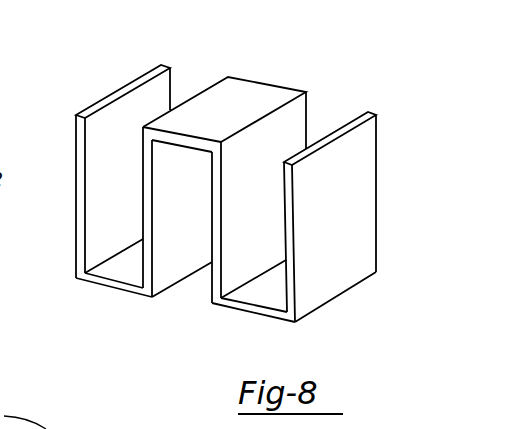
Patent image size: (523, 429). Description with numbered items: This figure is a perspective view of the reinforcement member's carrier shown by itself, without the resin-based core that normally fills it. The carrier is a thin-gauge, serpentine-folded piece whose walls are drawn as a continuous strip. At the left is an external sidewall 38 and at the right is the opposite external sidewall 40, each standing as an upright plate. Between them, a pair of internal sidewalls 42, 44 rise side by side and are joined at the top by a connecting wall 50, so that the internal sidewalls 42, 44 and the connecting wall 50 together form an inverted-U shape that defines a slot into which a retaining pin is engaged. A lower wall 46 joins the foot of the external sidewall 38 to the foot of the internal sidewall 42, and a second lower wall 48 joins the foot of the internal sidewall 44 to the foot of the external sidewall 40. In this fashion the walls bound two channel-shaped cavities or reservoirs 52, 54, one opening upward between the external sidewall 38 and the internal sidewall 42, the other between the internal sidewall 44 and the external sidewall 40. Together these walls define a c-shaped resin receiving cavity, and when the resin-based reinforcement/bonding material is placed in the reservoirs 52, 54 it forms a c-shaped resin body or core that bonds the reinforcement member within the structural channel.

The external sidewall 38 is at (75, 168).
The external sidewall 40 is at (343, 213).
The internal sidewall 42 is at (135, 155).
The internal sidewall 44 is at (268, 201).
The lower wall 46 is at (110, 291).
The lower wall 48 is at (248, 318).
The connecting wall 50 is at (228, 108).
The channel-shaped cavity or reservoir 52 is at (192, 80).
The channel-shaped cavity or reservoir 54 is at (315, 115).